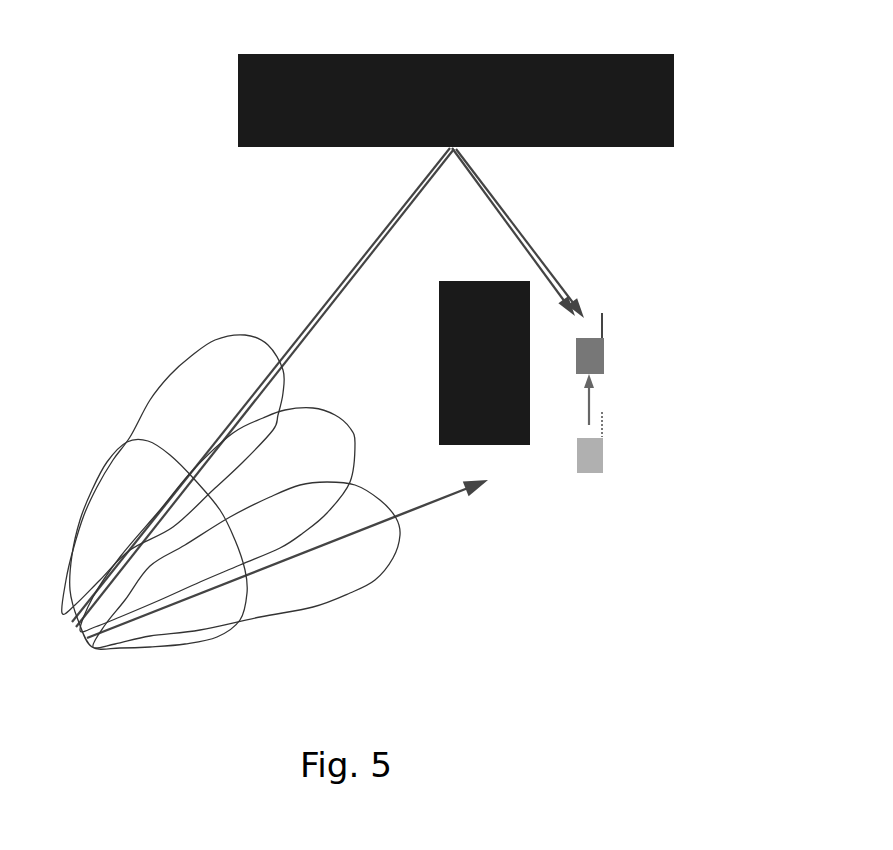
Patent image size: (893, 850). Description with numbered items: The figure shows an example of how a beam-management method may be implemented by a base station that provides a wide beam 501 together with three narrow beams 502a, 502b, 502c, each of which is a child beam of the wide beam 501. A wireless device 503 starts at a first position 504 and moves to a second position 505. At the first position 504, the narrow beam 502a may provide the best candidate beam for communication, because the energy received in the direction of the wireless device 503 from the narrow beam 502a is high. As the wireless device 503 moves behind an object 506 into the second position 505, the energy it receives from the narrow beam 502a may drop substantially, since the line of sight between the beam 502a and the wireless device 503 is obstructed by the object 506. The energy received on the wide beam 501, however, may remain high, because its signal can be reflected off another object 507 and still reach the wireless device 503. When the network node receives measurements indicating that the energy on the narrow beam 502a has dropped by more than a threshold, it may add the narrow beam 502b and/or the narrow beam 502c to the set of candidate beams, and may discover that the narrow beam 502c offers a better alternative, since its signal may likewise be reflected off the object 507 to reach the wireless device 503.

The wide beam 501 is at (163, 648).
The narrow beam 502a is at (392, 560).
The narrow beam 502b is at (357, 447).
The narrow beam 502c is at (192, 355).
The wireless device 503 is at (603, 345).
The position 504 is at (602, 462).
The position 505 is at (595, 383).
The object 506 is at (438, 308).
The object 507 is at (627, 54).